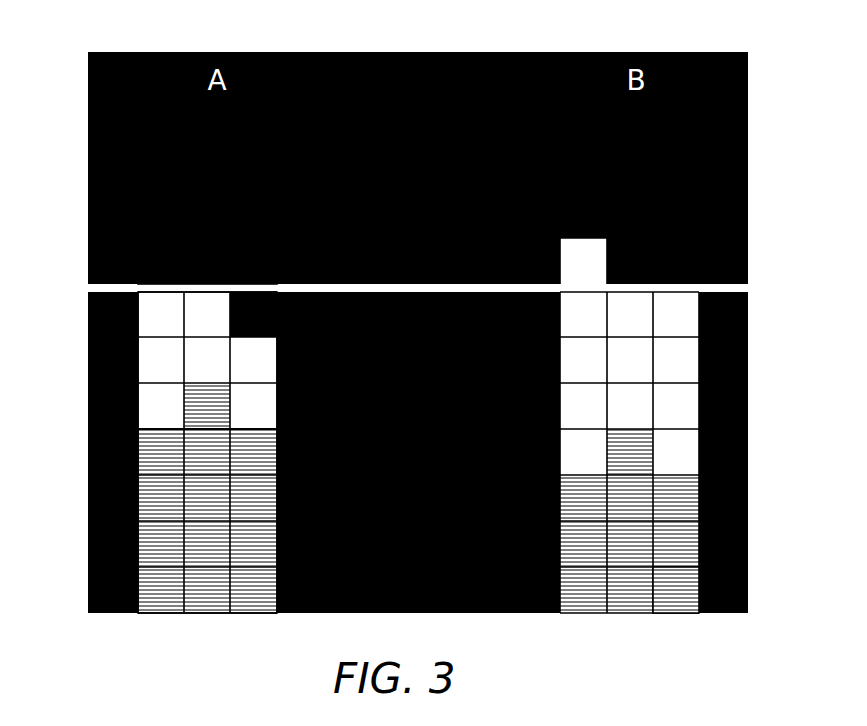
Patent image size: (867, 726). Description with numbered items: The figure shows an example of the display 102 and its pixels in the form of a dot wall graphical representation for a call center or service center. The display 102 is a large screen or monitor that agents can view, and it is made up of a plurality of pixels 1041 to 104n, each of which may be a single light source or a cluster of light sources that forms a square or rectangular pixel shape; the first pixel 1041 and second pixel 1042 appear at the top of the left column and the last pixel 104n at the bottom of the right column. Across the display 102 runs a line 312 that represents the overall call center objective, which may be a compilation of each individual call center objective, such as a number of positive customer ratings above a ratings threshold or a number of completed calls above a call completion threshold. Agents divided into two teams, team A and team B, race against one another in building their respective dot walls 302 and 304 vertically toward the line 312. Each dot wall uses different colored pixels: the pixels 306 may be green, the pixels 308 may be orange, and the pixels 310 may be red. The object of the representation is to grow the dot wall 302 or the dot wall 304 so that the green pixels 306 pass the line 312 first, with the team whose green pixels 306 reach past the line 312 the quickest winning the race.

The display 102 is at (461, 52).
The pixel 1041 is at (153, 171).
The pixel 1042 is at (203, 168).
The pixel 104n is at (677, 616).
The dot wall 302 is at (161, 616).
The dot wall 304 is at (631, 616).
The green pixels 306 is at (152, 498).
The orange pixels 308 is at (138, 357).
The red pixels 310 is at (137, 217).
The line 312 is at (88, 290).